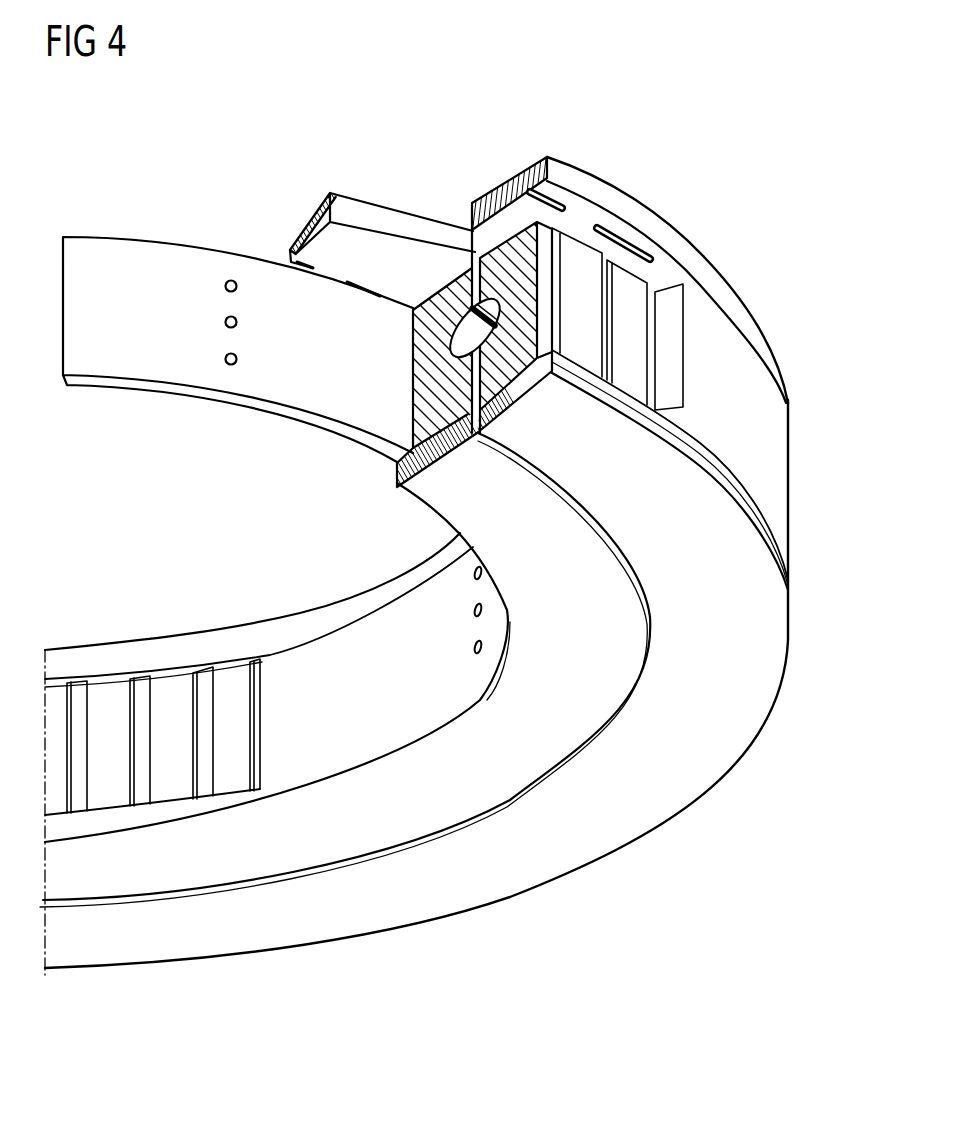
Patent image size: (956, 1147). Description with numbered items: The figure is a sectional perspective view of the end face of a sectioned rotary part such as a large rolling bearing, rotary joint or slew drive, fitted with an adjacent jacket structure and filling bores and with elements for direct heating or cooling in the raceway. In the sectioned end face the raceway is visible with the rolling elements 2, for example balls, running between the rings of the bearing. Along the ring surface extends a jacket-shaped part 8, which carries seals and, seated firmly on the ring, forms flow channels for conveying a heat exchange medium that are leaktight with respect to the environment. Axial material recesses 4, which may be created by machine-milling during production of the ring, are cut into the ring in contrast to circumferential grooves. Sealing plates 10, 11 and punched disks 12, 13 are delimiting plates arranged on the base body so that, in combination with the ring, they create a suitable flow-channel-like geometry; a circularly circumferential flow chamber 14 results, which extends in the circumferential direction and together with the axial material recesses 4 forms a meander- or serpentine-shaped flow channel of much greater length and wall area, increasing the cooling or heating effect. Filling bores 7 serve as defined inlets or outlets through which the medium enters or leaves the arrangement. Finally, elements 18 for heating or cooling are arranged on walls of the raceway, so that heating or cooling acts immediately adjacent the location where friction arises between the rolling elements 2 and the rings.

The rolling elements 2 is at (452, 343).
The axial material recesses 4 is at (567, 257).
The filling bores 7 is at (224, 359).
The jacket-shaped part 8 is at (125, 262).
The sealing plate 10 is at (488, 196).
The sealing plate 11 is at (630, 797).
The punched disk 12 is at (506, 190).
The punched disk 13 is at (700, 442).
The flow chamber 14 is at (631, 247).
The elements for heating or cooling 18 is at (463, 310).